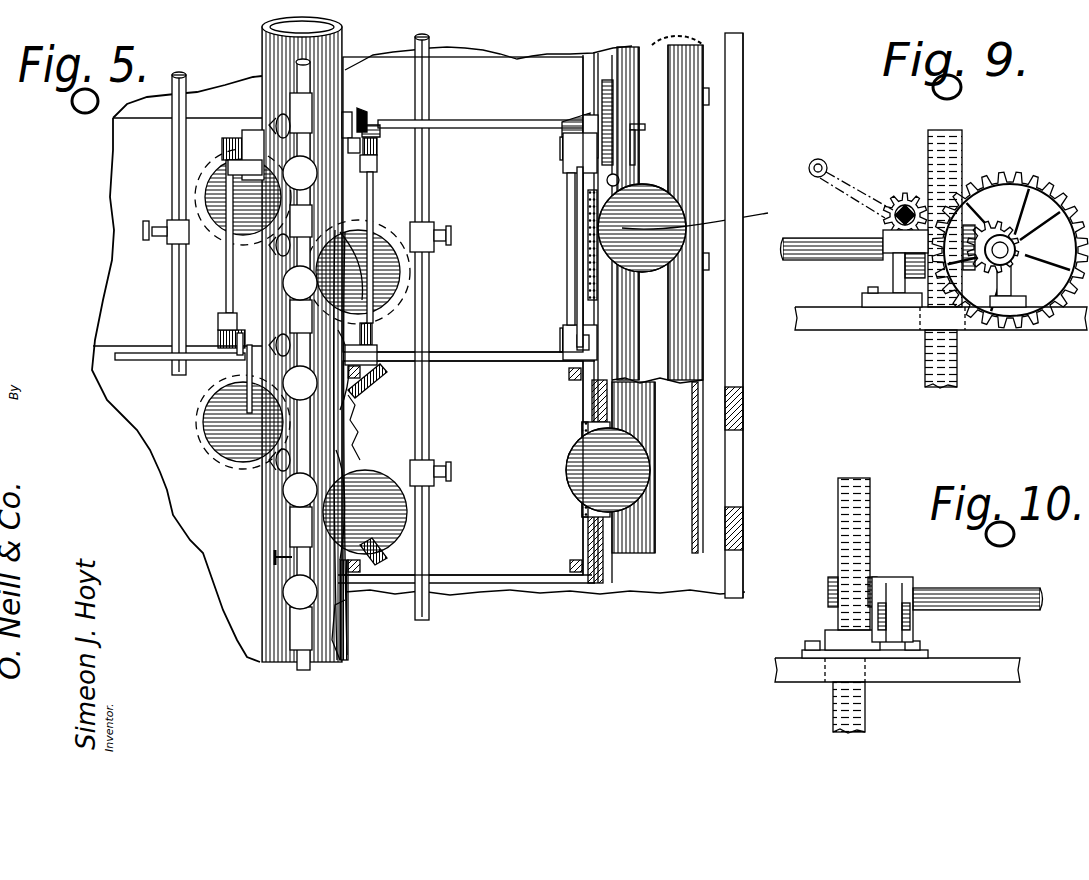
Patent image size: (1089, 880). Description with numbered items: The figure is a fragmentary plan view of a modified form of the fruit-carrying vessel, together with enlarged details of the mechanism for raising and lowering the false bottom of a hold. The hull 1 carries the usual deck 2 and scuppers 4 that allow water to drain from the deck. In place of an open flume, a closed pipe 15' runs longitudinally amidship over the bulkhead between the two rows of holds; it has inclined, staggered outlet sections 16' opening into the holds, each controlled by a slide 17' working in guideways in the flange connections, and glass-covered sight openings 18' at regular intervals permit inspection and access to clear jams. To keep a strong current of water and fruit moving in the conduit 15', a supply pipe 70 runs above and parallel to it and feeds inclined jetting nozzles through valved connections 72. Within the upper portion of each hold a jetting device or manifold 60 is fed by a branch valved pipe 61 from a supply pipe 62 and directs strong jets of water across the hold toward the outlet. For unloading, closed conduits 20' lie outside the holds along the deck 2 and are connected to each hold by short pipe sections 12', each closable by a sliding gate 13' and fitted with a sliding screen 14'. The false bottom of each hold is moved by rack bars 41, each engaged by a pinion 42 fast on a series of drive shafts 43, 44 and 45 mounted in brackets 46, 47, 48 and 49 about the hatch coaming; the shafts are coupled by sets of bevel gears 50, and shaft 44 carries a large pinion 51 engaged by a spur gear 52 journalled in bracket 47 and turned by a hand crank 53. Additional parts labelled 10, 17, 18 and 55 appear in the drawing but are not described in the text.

In FIG. 5, the hull 1 is at (745, 366).
In FIG. 5, the deck 2 is at (672, 594).
In FIG. 5, the scuppers 4 is at (745, 463).
In FIG. 5, the lower panel 10 is at (463, 468).
In FIG. 5, the pipe section 12' is at (659, 369).
In FIG. 5, the sliding gate 13' is at (626, 348).
In FIG. 5, the sliding screen 14' is at (566, 353).
In FIG. 5, the closed pipe 15' is at (328, 339).
In FIG. 5, the outlet sections 16' is at (302, 351).
In FIG. 5, the rod 17 is at (242, 286).
In FIG. 5, the slide 17' is at (366, 527).
In FIG. 5, the upper panel 18 is at (463, 204).
In FIG. 5, the sight openings 18' is at (251, 294).
In FIG. 5, the closed conduits 20' is at (696, 294).
In FIG. 5, the rack bars 41 is at (250, 132).
In FIG. 9, the rack bars 41 is at (958, 371).
In FIG. 10, the rack bars 41 is at (865, 542).
In FIG. 5, the pinion 42 is at (222, 148).
In FIG. 10, the pinion 42 is at (875, 578).
In FIG. 5, the drive shaft 43 is at (567, 268).
In FIG. 9, the drive shaft 43 is at (840, 238).
In FIG. 10, the drive shaft 43 is at (970, 582).
In FIG. 5, the drive shaft 44 is at (501, 120).
In FIG. 9, the drive shaft 44 is at (1003, 243).
In FIG. 5, the drive shaft 45 is at (375, 222).
In FIG. 5, the bracket 46 is at (596, 334).
In FIG. 10, the bracket 46 is at (890, 632).
In FIG. 5, the bracket 47 is at (590, 116).
In FIG. 9, the bracket 47 is at (895, 250).
In FIG. 5, the bracket 48 is at (365, 110).
In FIG. 5, the bracket 49 is at (384, 369).
In FIG. 5, the bevel gears 50 is at (378, 124).
In FIG. 5, the large pinion 51 is at (617, 105).
In FIG. 9, the large pinion 51 is at (1046, 194).
In FIG. 5, the spur gear 52 is at (622, 180).
In FIG. 9, the spur gear 52 is at (905, 194).
In FIG. 5, the hand crank 53 is at (637, 150).
In FIG. 9, the hand crank 53 is at (850, 178).
In FIG. 9, the pinion 55 is at (985, 232).
In FIG. 5, the jetting device 60 is at (381, 551).
In FIG. 5, the branch valved pipe 61 is at (172, 205).
In FIG. 5, the supply pipe 62 is at (172, 302).
In FIG. 5, the supply pipe 70 is at (304, 70).
In FIG. 5, the valved connections 72 is at (270, 557).